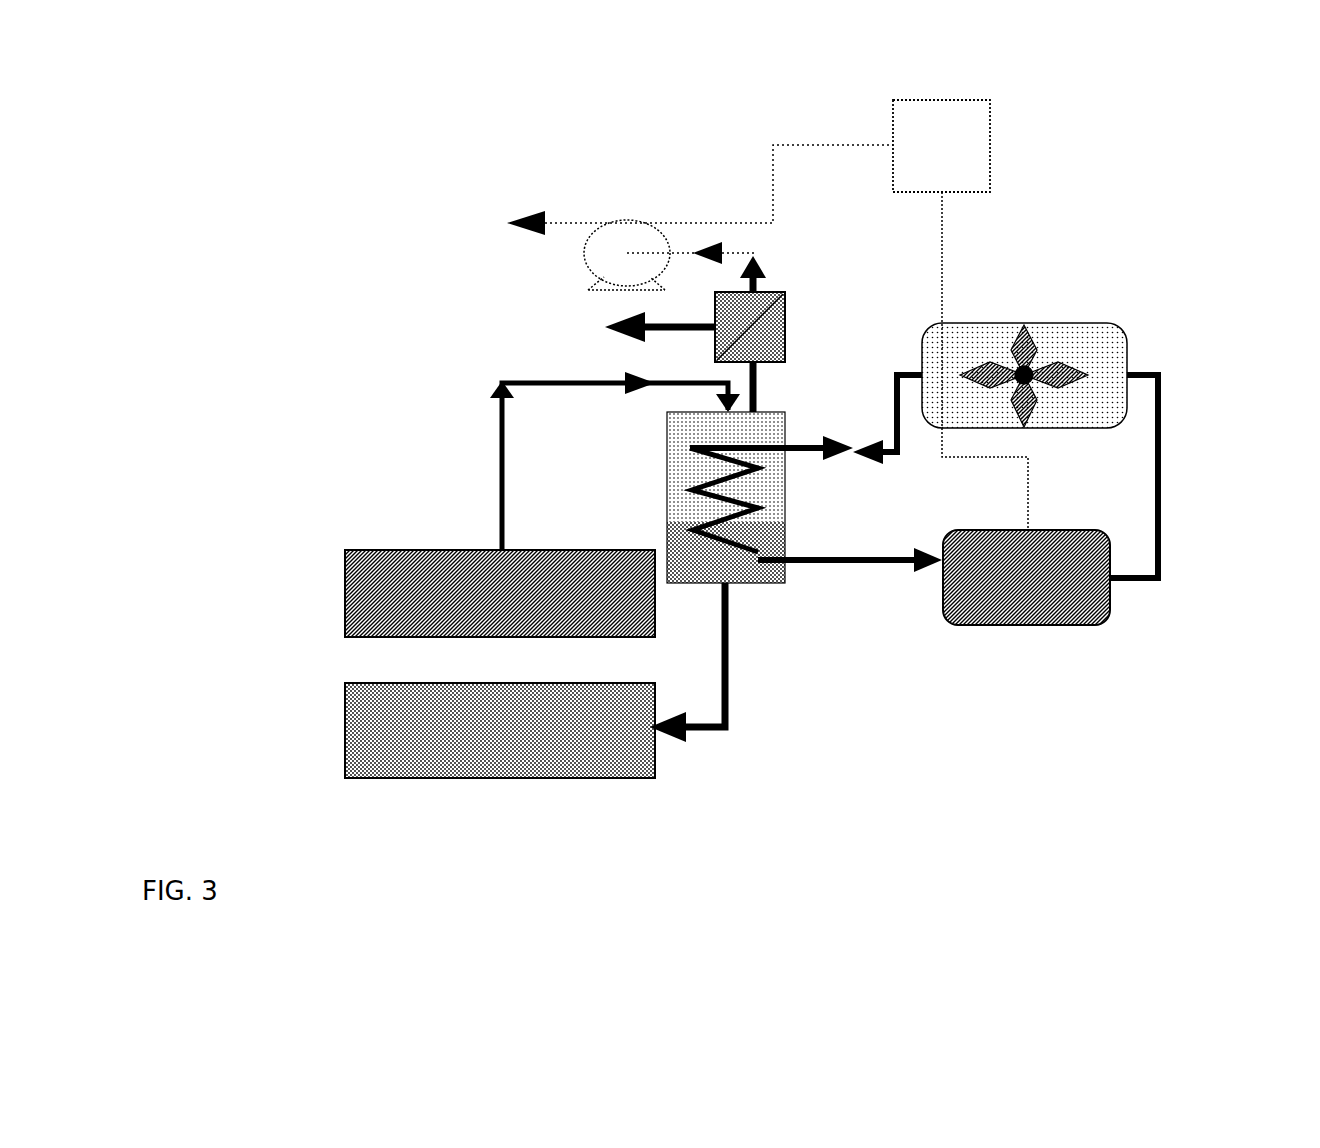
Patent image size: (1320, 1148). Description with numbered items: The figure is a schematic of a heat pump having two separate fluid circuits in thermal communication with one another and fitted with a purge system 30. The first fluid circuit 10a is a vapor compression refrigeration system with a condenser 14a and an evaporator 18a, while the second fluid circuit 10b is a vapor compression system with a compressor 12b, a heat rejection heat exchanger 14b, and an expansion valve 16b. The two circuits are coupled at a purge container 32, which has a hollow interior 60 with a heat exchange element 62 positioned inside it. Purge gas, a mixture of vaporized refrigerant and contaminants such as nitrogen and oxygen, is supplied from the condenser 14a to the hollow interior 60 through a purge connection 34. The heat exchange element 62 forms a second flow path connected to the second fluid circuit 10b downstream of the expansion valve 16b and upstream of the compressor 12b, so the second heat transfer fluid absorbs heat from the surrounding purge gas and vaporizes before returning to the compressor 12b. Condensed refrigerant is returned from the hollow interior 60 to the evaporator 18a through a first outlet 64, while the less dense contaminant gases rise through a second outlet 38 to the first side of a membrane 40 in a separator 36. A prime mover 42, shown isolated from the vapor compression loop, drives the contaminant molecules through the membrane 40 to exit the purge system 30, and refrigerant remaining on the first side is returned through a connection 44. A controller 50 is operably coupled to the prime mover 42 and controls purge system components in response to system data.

The first fluid circuit 10a is at (262, 635).
The second fluid circuit 10b is at (1200, 280).
The compressor 12b is at (1083, 625).
The condenser 14a is at (343, 570).
The heat rejection heat exchanger 14b is at (1098, 345).
The expansion valve 16b is at (858, 464).
The evaporator 18a is at (342, 733).
The purge system 30 is at (467, 224).
The purge container 32 is at (667, 458).
The purge connection 34 is at (495, 440).
The separator 36 is at (787, 328).
The second outlet 38 is at (762, 412).
The membrane 40 is at (772, 292).
The prime mover 42 is at (626, 220).
The connection 44 is at (598, 329).
The controller 50 is at (960, 315).
The hollow interior 60 is at (683, 504).
The heat exchange element 62 is at (728, 542).
The first outlet 64 is at (713, 586).